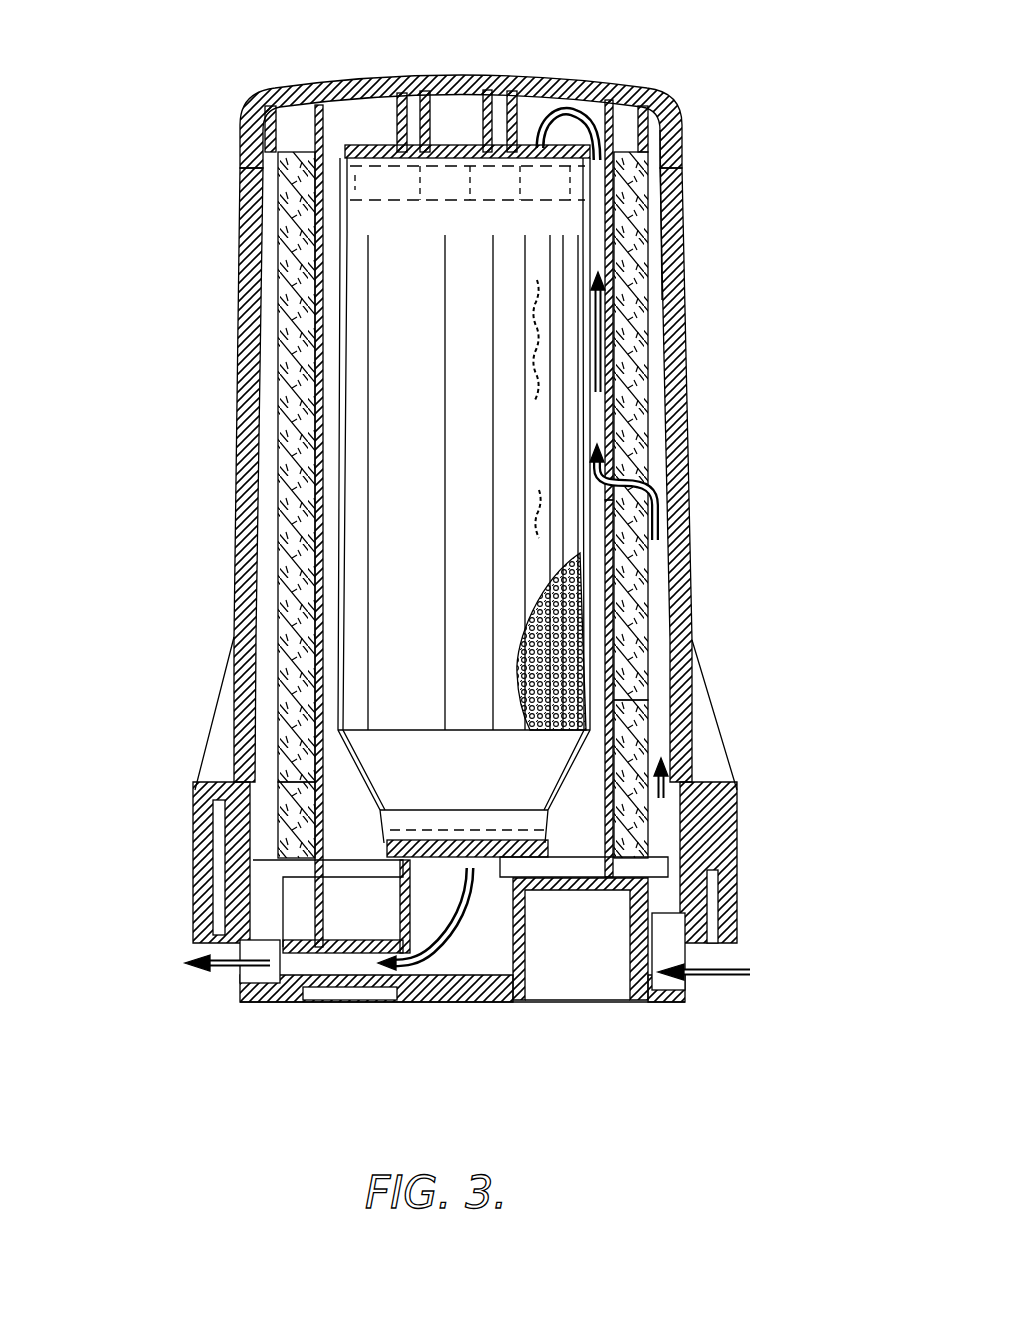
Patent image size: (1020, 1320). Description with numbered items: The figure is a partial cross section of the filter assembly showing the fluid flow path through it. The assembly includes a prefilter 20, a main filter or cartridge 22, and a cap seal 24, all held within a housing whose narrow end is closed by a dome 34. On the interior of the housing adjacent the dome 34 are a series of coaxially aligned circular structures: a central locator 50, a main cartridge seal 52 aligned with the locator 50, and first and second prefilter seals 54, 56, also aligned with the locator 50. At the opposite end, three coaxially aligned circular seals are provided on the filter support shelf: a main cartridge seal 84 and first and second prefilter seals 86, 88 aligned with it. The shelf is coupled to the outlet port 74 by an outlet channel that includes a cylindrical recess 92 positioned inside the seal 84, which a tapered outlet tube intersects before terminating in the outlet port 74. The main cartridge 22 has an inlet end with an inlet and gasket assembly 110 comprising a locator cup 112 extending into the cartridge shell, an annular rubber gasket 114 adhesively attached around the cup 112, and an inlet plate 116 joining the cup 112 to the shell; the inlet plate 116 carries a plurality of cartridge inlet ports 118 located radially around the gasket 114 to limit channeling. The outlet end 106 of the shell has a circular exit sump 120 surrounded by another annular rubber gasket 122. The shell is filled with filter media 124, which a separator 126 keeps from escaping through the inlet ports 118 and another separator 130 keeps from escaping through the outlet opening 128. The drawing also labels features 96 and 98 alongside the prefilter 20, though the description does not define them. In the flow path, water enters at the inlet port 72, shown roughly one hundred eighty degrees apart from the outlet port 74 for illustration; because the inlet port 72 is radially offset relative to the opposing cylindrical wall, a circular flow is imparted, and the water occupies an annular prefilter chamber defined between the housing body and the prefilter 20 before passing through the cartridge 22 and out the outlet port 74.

The prefilter 20 is at (660, 630).
The main filter or cartridge 22 is at (570, 437).
The cap seal 24 is at (235, 792).
The dome 34 is at (340, 92).
The central locator 50 is at (498, 100).
The main cartridge seal 52 is at (545, 112).
The first prefilter seal 54 is at (646, 110).
The second prefilter seal 56 is at (672, 135).
The inlet port 72 is at (695, 960).
The outlet port 74 is at (238, 990).
The main cartridge seal 84 is at (330, 842).
The first prefilter seal 86 is at (310, 862).
The second prefilter seal 88 is at (222, 948).
The cylindrical recess 92 is at (450, 960).
The insulation 96 is at (632, 600).
The flow passage 98 is at (637, 540).
The outlet end 106 is at (290, 812).
The inlet and gasket assembly 110 is at (655, 180).
The locator cup 112 is at (688, 250).
The annular rubber gasket 114 is at (380, 160).
The inlet plate 116 is at (335, 190).
The cartridge inlet ports 118 is at (223, 258).
The exit sump 120 is at (464, 880).
The annular rubber gasket 122 is at (545, 858).
The filter media 124 is at (614, 682).
The separator 126 is at (240, 307).
The outlet opening 128 is at (540, 905).
The separator 130 is at (650, 745).